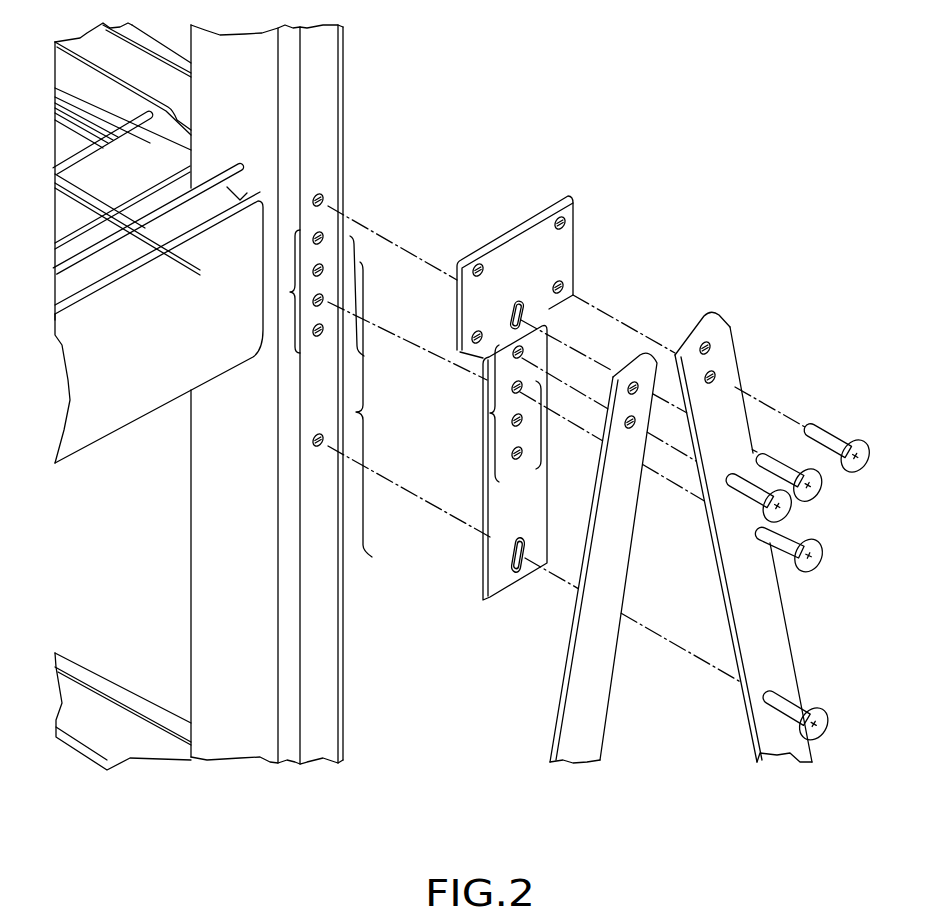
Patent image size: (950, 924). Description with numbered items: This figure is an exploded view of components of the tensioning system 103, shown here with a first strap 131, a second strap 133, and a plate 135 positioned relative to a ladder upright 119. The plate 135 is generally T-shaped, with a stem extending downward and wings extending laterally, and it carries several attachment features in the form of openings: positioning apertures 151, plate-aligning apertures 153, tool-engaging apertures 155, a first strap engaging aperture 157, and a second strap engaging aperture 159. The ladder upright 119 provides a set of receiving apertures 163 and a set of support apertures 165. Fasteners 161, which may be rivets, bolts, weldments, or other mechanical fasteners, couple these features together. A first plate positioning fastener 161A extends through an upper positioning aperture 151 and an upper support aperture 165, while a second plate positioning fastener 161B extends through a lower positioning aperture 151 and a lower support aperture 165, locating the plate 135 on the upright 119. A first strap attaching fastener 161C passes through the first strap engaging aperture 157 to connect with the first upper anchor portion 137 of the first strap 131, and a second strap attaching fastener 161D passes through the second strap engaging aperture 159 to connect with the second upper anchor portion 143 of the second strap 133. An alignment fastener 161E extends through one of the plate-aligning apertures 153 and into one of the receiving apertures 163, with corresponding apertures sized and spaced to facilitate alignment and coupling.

The tensioning system 103 is at (733, 155).
The ladder upright 119 is at (323, 69).
The first strap 131 is at (567, 692).
The second strap 133 is at (764, 532).
The plate 135 is at (512, 246).
The first upper anchor portion 137 is at (612, 442).
The second upper anchor portion 143 is at (738, 378).
The positioning apertures 151 is at (519, 304).
The plate-aligning apertures 153 is at (490, 413).
The tool-engaging apertures 155 is at (476, 267).
The first strap engaging aperture 157 is at (476, 338).
The second strap engaging aperture 159 is at (563, 288).
The fasteners 161 is at (870, 360).
The first plate positioning fastener 161A is at (822, 494).
The second plate positioning fastener 161B is at (814, 738).
The first strap attaching fastener 161C is at (790, 513).
The second strap attaching fastener 161D is at (870, 456).
The alignment fastener 161E is at (810, 569).
The receiving apertures 163 is at (296, 293).
The support apertures 165 is at (322, 201).